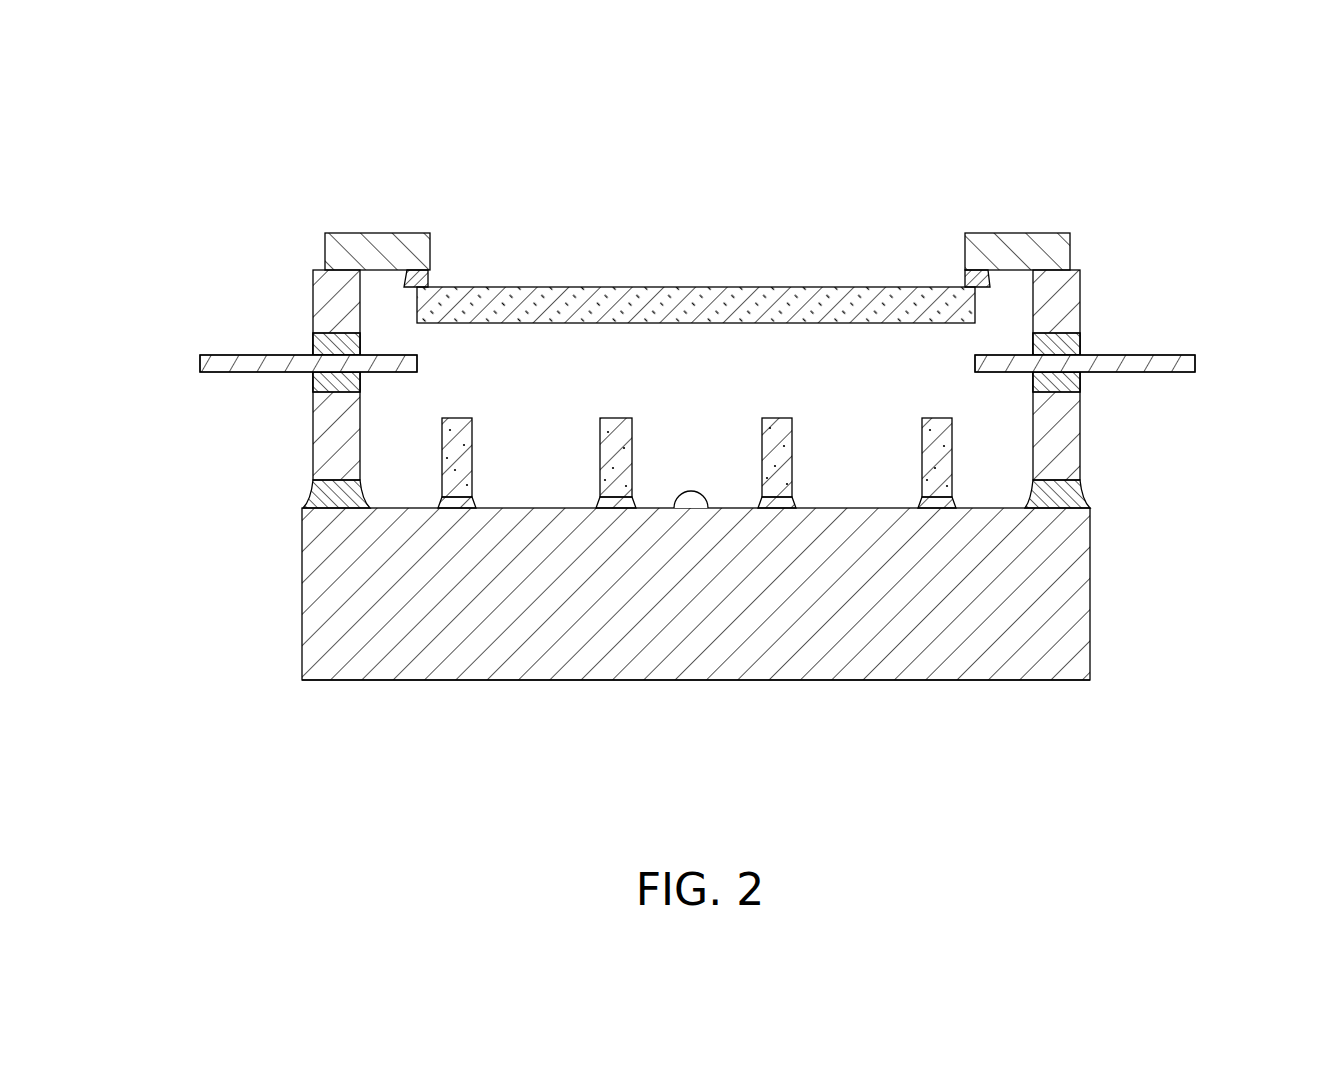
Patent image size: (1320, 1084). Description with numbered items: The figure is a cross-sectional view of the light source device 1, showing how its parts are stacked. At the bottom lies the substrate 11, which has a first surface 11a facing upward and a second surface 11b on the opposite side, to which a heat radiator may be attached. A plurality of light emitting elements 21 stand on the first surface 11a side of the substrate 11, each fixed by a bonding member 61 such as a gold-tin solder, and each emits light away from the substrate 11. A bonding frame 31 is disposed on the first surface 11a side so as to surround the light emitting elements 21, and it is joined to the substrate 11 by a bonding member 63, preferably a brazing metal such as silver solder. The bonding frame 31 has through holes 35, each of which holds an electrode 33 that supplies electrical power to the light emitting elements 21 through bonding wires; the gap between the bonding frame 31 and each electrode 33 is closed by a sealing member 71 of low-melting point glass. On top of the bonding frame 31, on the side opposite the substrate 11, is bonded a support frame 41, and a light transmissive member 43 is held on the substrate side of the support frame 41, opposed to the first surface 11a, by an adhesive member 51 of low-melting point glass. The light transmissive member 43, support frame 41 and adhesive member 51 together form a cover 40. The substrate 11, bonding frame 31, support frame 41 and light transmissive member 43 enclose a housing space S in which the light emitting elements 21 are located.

The light source device 1 is at (1146, 142).
The substrate 11 is at (781, 652).
The first surface 11a is at (704, 512).
The second surface 11b is at (563, 682).
The light emitting elements 21 is at (445, 446).
The bonding frame 31 is at (304, 288).
The electrodes 33 is at (215, 362).
The through holes 35 is at (318, 383).
The cover 40 is at (1032, 131).
The support frame 41 is at (1020, 236).
The light transmissive member 43 is at (912, 290).
The adhesive member 51 is at (966, 280).
The bonding member 61 is at (453, 502).
The bonding member 63 is at (318, 491).
The sealing member 71 is at (322, 346).
The housing space S is at (853, 398).